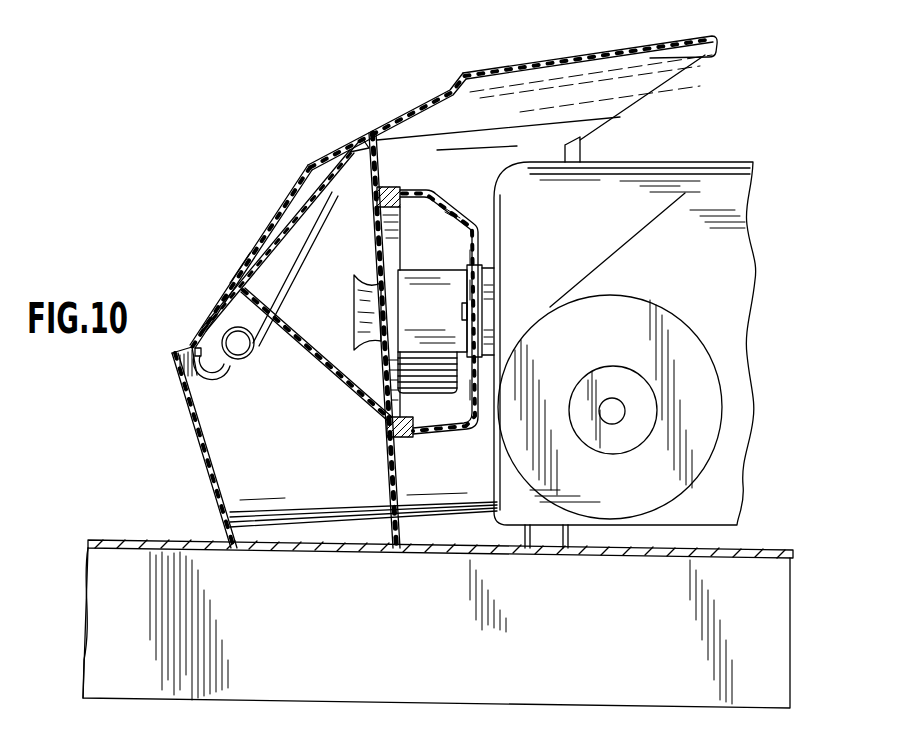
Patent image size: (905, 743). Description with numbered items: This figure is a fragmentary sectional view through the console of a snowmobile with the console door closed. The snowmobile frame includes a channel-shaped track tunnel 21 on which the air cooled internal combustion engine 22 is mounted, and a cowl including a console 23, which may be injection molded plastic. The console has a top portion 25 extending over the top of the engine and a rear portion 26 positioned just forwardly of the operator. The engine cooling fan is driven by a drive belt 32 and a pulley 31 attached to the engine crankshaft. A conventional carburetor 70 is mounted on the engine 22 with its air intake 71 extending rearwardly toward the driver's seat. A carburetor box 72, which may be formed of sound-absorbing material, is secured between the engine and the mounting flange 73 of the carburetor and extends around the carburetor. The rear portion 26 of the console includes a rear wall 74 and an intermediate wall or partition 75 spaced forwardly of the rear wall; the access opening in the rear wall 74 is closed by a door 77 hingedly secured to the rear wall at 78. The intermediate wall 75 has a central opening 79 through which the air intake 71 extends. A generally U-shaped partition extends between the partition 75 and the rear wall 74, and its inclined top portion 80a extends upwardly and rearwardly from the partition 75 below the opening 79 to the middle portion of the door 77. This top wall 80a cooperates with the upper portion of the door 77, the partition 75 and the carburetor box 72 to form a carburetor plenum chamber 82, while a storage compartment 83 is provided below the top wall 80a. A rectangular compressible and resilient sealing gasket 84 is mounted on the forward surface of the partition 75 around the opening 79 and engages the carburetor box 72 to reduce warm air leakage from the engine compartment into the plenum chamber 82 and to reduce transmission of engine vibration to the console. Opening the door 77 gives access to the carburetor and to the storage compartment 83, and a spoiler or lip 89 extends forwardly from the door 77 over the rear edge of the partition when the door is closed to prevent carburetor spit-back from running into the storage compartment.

The track tunnel 21 is at (770, 643).
The internal combustion engine 22 is at (733, 283).
The console 23 is at (214, 487).
The top portion 25 is at (565, 58).
The rear portion 26 is at (417, 107).
The pulley 31 is at (705, 438).
The drive belt 32 is at (667, 213).
The carburetor 70 is at (426, 283).
The air intake 71 is at (358, 307).
The carburetor box 72 is at (450, 207).
The mounting flange 73 is at (463, 413).
The rear wall 74 is at (190, 420).
The intermediate wall 75 is at (388, 487).
The door 77 is at (230, 283).
The hinge 78 is at (205, 353).
The central opening 79 is at (308, 170).
The inclined top portion 80a is at (327, 372).
The carburetor plenum chamber 82 is at (317, 230).
The storage compartment 83 is at (228, 512).
The sealing gasket 84 is at (397, 187).
The spoiler or lip 89 is at (250, 250).